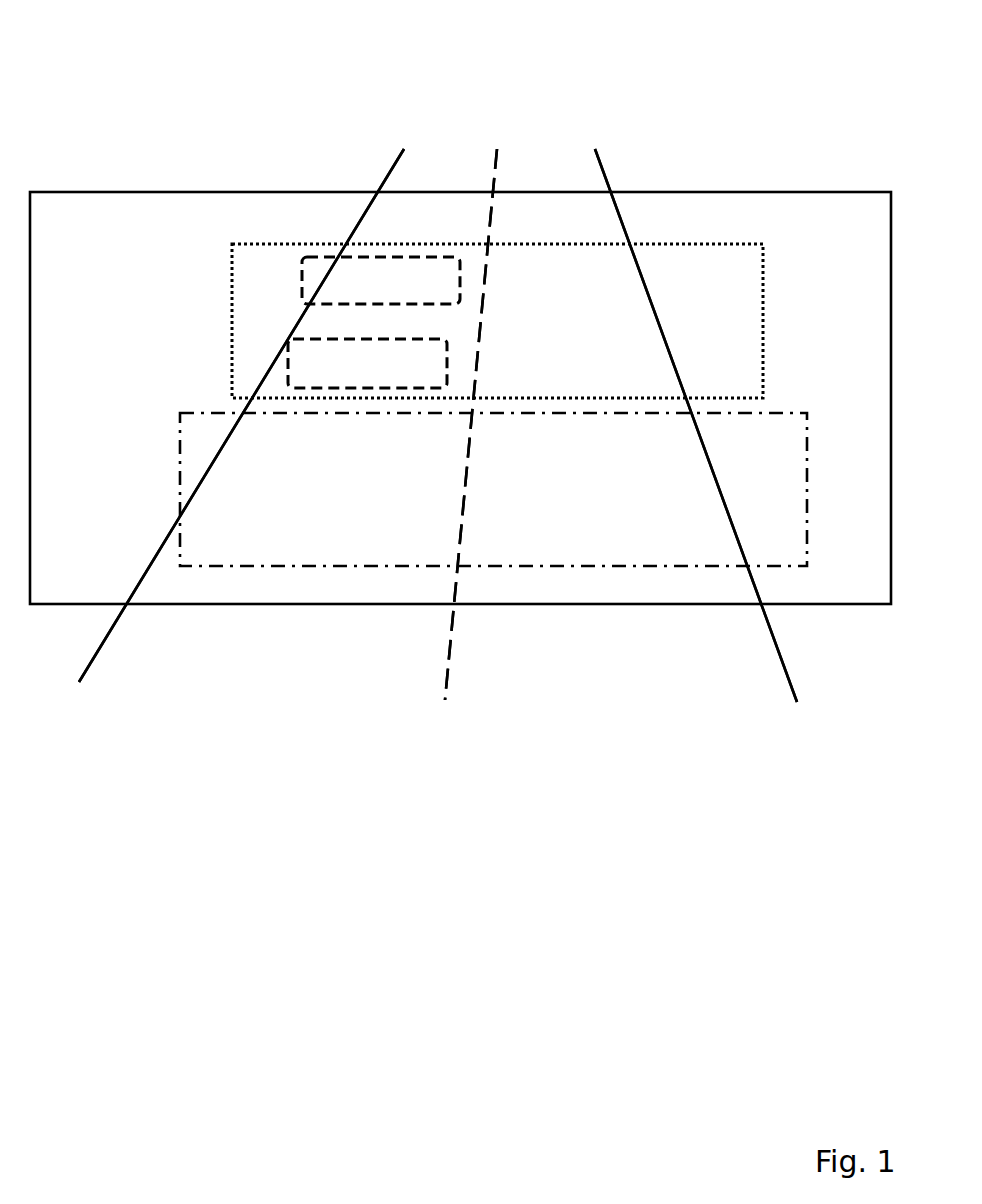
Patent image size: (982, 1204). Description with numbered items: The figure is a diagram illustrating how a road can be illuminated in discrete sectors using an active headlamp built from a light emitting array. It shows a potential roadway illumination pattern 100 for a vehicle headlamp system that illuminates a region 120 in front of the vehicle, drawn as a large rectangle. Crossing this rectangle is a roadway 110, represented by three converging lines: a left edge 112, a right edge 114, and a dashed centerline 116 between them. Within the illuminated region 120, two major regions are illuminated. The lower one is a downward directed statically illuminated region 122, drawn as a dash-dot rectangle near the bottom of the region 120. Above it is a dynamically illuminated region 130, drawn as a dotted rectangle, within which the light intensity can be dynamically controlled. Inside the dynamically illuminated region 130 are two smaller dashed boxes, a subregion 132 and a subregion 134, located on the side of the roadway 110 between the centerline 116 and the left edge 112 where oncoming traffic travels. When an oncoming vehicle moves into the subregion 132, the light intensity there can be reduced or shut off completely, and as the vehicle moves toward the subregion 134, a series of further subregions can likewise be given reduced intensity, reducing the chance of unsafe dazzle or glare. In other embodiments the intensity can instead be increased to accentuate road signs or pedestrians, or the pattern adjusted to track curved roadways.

The roadway illumination pattern 100 is at (733, 72).
The roadway 110 is at (253, 685).
The left edge 112 is at (110, 636).
The right edge 114 is at (787, 640).
The centerline 116 is at (453, 638).
The region 120 is at (778, 185).
The statically illuminated region 122 is at (173, 427).
The dynamically illuminated region 130 is at (223, 285).
The subregion 132 is at (400, 292).
The subregion 134 is at (388, 377).